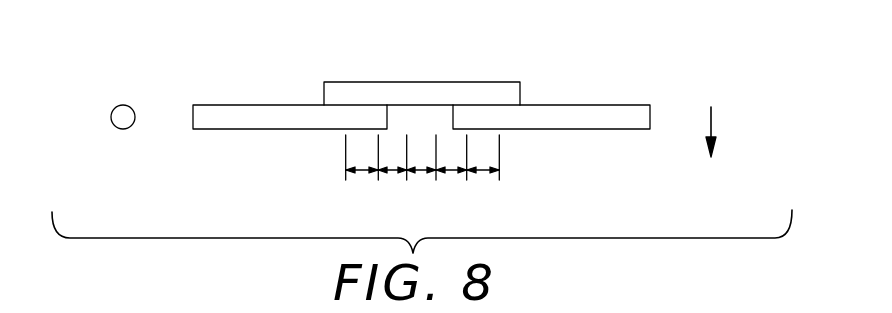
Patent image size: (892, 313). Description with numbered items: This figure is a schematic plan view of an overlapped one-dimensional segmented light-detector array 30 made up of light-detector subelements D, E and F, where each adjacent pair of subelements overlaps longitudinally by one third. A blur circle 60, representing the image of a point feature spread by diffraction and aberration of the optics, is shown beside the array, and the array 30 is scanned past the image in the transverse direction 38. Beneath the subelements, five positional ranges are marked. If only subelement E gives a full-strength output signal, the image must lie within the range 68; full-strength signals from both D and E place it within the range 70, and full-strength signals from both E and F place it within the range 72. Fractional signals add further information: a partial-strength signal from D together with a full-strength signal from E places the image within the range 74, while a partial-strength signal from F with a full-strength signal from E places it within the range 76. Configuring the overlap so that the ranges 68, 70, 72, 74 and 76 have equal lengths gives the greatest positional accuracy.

The segmented light-detector array 30 is at (207, 86).
The blur circle 60 is at (118, 128).
The transverse direction 38 is at (715, 120).
The range 70 is at (355, 172).
The range 74 is at (391, 172).
The range 68 is at (423, 172).
The range 76 is at (452, 172).
The range 72 is at (482, 172).